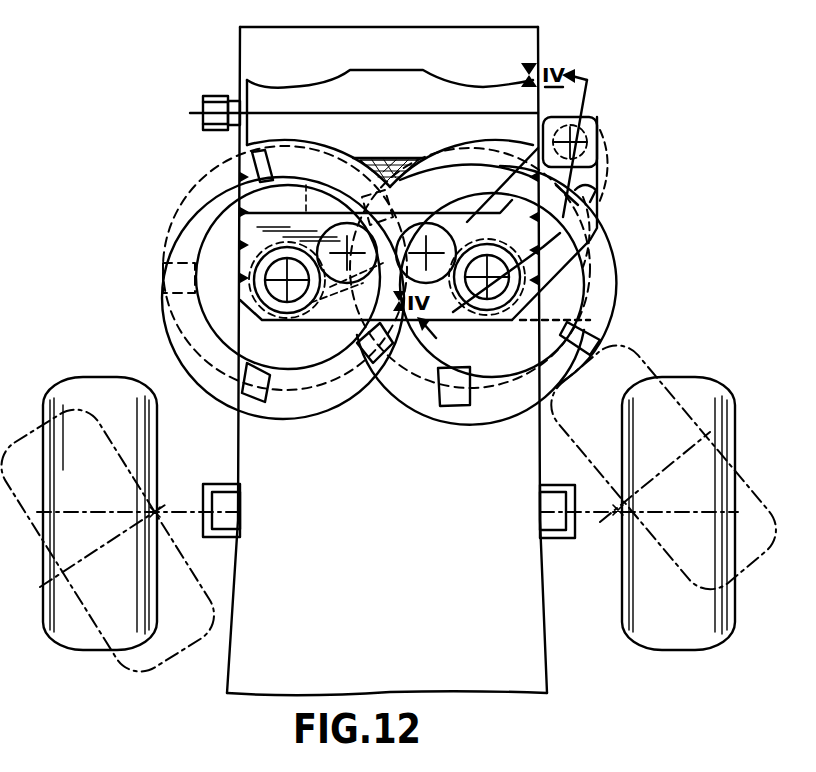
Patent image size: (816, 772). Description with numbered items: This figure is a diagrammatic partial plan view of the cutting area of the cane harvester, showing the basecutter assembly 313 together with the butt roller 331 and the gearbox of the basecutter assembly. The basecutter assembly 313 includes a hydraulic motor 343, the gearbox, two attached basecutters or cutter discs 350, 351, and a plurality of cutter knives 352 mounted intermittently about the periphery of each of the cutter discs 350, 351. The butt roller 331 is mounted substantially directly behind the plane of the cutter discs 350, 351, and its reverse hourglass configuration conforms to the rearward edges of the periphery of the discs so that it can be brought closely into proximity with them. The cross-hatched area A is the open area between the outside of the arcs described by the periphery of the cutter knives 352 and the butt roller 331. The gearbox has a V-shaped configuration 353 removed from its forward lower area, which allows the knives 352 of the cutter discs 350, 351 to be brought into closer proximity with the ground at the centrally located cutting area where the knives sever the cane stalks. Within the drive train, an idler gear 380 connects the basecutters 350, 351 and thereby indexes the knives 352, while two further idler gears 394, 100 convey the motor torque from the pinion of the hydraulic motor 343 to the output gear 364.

The basecutter assembly 313 is at (672, 282).
The butt roller 331 is at (314, 83).
The idler gear 380 is at (415, 230).
The cutter disc 350 is at (342, 385).
The cutter disc 351 is at (517, 387).
The cutter knives 352 is at (225, 173).
The V-shaped configuration 353 is at (358, 338).
The output gear 364 is at (532, 218).
The hydraulic motor 343 is at (597, 153).
The idler gear 394 is at (600, 180).
The idler gear 100 is at (560, 268).
The area A is at (385, 160).